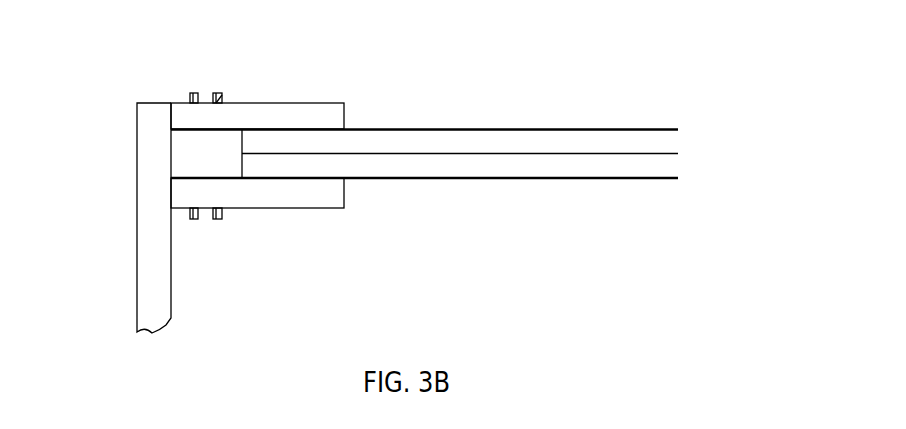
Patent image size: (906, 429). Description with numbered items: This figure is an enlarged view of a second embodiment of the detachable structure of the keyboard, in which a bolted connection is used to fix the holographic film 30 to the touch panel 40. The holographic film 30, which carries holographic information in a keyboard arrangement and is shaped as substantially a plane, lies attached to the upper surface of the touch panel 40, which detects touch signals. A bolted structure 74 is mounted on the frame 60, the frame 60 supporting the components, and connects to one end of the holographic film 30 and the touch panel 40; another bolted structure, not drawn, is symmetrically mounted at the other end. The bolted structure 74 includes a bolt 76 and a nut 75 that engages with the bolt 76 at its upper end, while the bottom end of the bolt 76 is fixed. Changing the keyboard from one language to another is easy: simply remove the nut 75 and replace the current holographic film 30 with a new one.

The holographic film 30 is at (638, 140).
The touch panel 40 is at (648, 175).
The frame 60 is at (150, 206).
The bolted structure 74 is at (208, 89).
The nut 75 is at (218, 95).
The bolt 76 is at (221, 220).